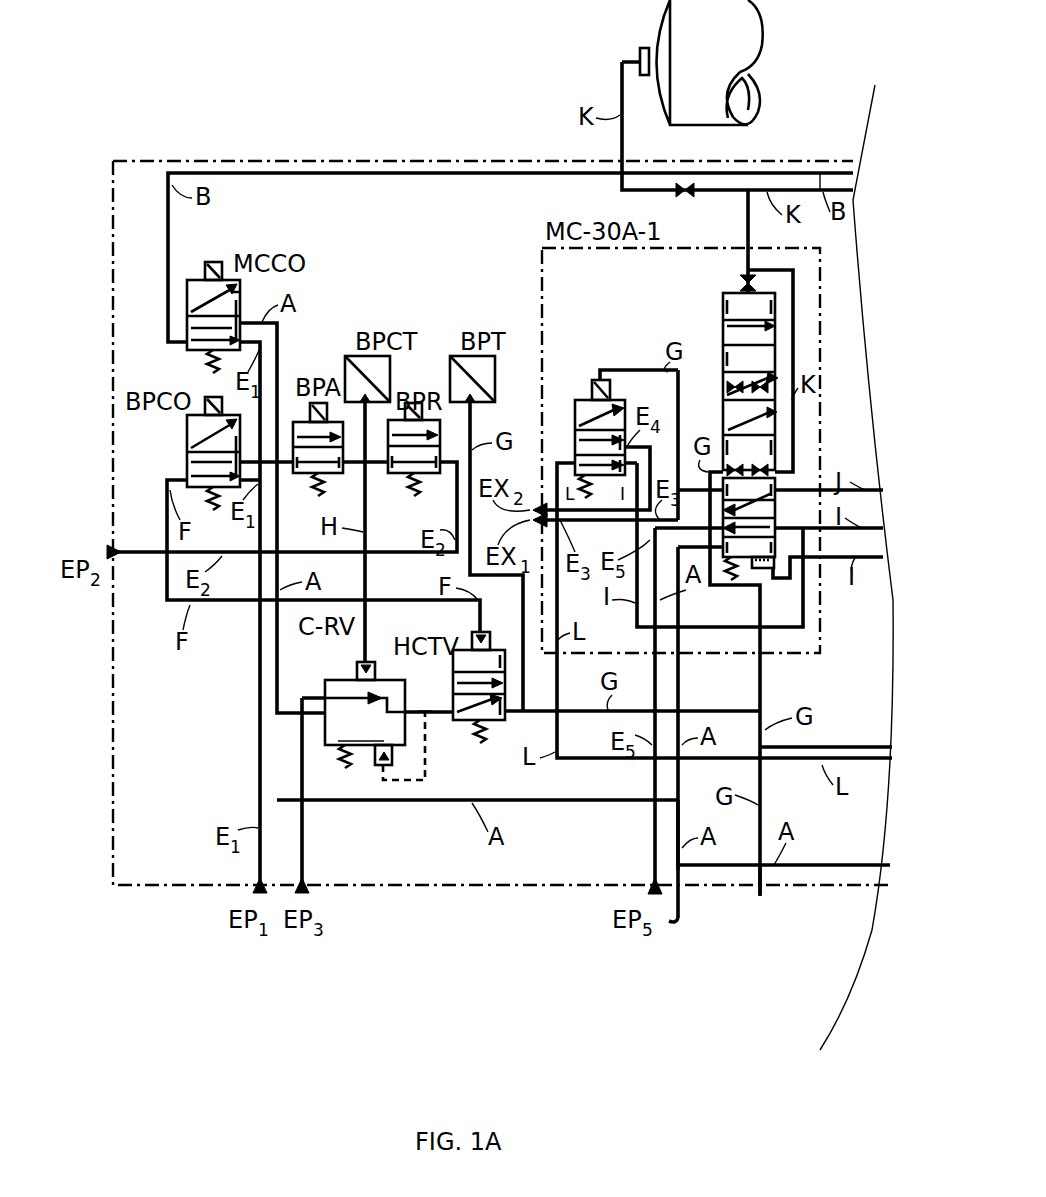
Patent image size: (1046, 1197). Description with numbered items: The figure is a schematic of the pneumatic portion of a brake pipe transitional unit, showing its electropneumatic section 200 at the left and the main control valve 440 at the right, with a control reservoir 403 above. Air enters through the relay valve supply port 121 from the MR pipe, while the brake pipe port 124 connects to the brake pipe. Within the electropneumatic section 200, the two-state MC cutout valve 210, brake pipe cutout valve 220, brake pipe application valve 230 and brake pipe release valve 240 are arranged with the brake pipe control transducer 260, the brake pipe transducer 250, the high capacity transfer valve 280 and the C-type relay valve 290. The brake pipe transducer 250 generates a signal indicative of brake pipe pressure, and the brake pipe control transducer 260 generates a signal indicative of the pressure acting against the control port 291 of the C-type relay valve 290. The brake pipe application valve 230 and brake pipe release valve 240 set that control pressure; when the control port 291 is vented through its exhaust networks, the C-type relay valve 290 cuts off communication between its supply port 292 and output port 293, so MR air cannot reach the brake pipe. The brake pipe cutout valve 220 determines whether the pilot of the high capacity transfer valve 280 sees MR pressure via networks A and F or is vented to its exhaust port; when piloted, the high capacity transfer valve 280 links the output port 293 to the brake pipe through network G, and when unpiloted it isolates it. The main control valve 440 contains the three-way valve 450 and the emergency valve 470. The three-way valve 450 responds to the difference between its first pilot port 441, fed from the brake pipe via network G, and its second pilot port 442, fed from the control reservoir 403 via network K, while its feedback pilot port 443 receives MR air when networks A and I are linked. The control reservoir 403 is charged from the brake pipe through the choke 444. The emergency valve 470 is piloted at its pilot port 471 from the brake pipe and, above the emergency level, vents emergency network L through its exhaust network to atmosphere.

The control reservoir 403 is at (660, 16).
The electropneumatic section 200 is at (428, 252).
The MC-30A-1 control valve 440 is at (540, 246).
The choke 444 is at (687, 194).
The second pilot port 442 is at (744, 282).
The 3-way valve 450 is at (722, 318).
The first pilot port 441 is at (742, 580).
The feedback pilot port 443 is at (770, 575).
The emergency valve 470 is at (575, 405).
The pilot port 471 is at (600, 378).
The MC cutout valve 210 is at (195, 278).
The brake pipe cutout valve 220 is at (210, 396).
The brake pipe application valve 230 is at (308, 405).
The brake pipe release valve 240 is at (435, 390).
The brake pipe control transducer 260 is at (348, 355).
The brake pipe transducer 250 is at (452, 356).
The C-type relay valve 290 is at (365, 724).
The control port 291 is at (356, 672).
The supply port 292 is at (322, 735).
The output port 293 is at (420, 710).
The high capacity transfer valve 280 is at (468, 635).
The relay valve supply port 121 is at (682, 895).
The brake pipe port 124 is at (765, 920).